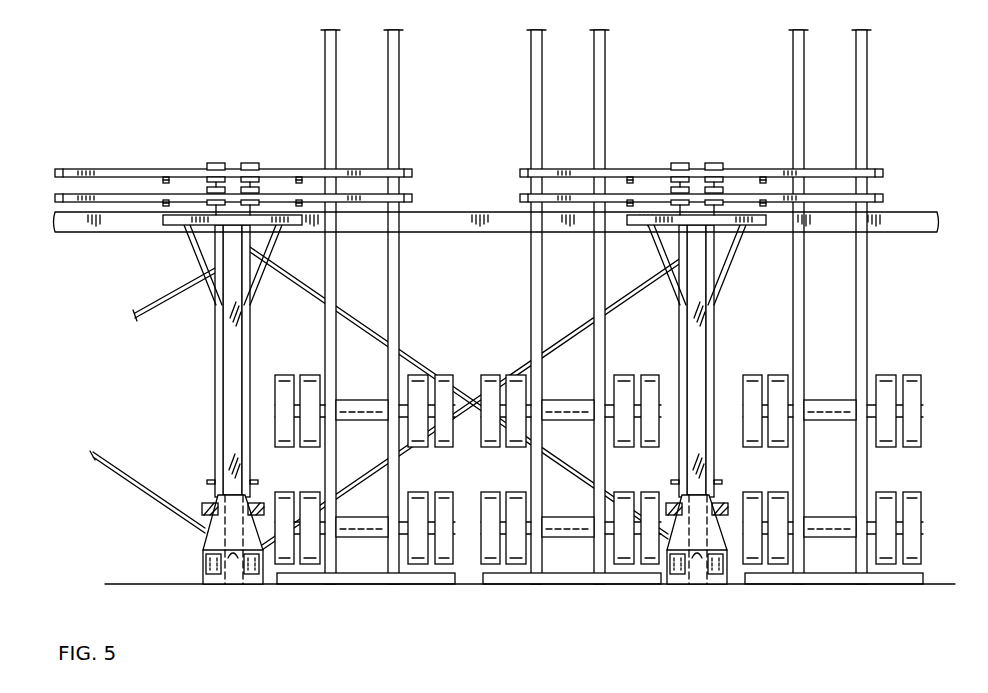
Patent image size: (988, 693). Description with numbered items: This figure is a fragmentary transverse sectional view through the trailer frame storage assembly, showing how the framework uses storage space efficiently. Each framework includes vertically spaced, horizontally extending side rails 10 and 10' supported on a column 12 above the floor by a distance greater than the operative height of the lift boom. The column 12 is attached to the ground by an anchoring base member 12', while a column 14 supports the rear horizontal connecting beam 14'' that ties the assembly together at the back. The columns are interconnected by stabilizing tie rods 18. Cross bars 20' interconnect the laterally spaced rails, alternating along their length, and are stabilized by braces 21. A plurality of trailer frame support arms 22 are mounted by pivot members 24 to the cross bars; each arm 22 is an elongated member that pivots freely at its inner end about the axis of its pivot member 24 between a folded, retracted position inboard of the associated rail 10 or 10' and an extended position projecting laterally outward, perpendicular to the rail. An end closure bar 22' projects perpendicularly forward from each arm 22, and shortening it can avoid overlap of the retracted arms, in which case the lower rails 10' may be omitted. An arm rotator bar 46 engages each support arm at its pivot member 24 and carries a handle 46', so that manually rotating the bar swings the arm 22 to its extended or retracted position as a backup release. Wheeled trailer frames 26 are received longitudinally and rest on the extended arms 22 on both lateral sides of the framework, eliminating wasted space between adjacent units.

The side rail 10 is at (519, 170).
The lower side rail 10' is at (413, 170).
The column 12 is at (433, 360).
The base member 12' is at (465, 557).
The column 14 is at (496, 247).
The rear horizontal connecting beam 14'' is at (460, 192).
The stabilizing tie rod 18 is at (145, 306).
The cross bar 20' is at (450, 245).
The brace 21 is at (275, 250).
The trailer frame support arm 22 is at (469, 162).
The end closure bar 22' is at (488, 170).
The pivot member 24 is at (250, 163).
The wheeled trailer frame 26 is at (400, 278).
The arm rotator bar 46 is at (465, 361).
The handle 46' is at (498, 471).